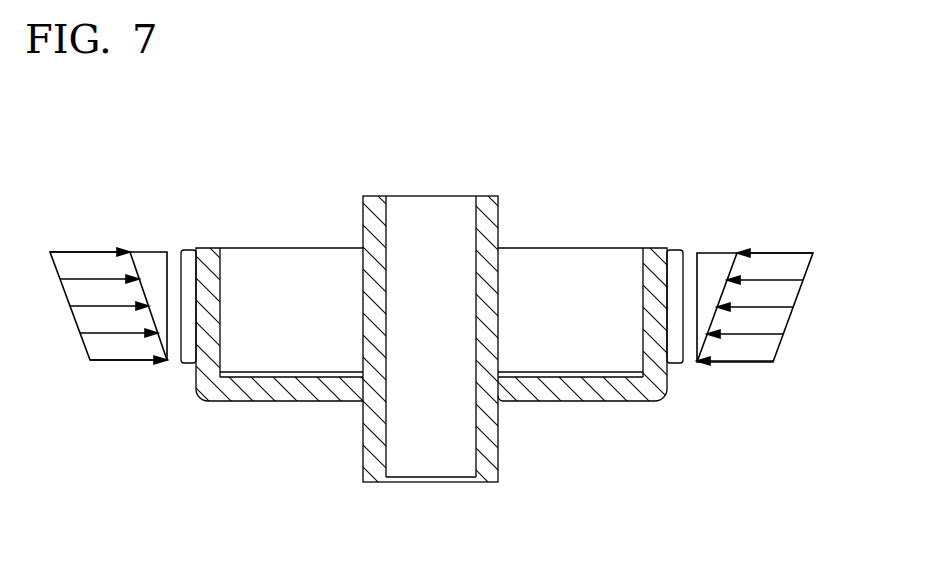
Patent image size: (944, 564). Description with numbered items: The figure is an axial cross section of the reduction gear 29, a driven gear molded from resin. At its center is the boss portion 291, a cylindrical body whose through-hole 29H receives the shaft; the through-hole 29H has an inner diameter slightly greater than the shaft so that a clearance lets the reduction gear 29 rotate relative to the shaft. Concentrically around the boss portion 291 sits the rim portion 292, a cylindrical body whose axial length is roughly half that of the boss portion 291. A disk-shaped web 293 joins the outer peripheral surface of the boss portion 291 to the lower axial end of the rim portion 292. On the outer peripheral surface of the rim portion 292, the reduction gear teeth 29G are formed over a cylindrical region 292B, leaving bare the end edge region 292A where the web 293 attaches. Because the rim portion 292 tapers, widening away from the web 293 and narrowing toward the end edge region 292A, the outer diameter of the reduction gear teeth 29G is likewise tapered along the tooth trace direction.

The reduction gear 29 is at (612, 173).
The boss portion 291 is at (498, 218).
The rim portion 292 is at (223, 268).
The end edge region 292A is at (675, 380).
The cylindrical region 292B is at (633, 252).
The web 293 is at (290, 401).
The reduction gear teeth 29G is at (190, 252).
The through-hole 29H is at (458, 342).